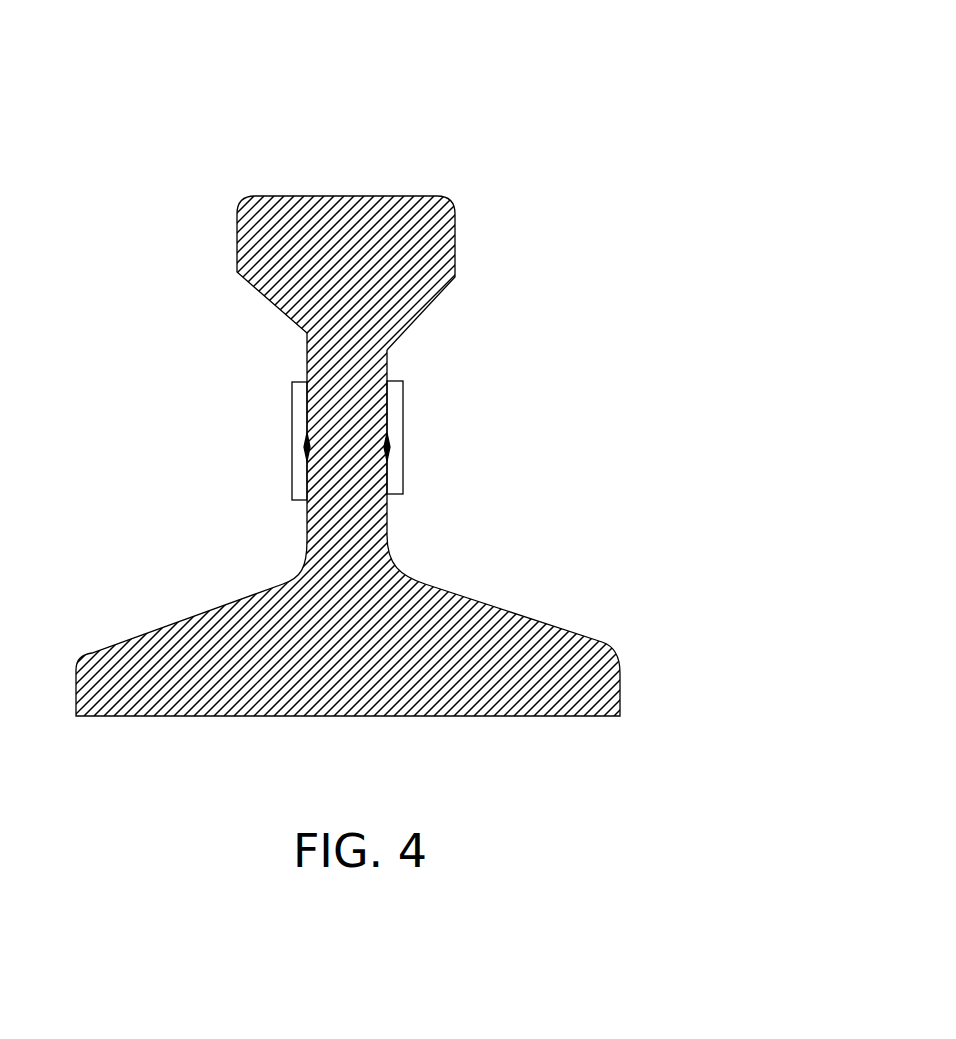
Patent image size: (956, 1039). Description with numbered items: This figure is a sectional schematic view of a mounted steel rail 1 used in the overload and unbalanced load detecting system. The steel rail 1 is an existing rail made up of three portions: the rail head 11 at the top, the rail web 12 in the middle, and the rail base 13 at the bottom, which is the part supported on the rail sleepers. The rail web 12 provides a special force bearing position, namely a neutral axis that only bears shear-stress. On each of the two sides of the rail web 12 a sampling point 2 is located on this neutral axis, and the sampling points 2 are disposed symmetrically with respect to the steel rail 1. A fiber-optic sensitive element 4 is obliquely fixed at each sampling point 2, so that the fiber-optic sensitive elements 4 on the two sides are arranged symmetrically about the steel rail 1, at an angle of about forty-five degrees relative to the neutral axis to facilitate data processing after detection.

The steel rail 1 is at (478, 358).
The rail head 11 is at (453, 213).
The rail web 12 is at (387, 368).
The rail base 13 is at (598, 646).
The fiber-optic sensitive element 4 is at (405, 402).
The sampling point 2 is at (389, 447).